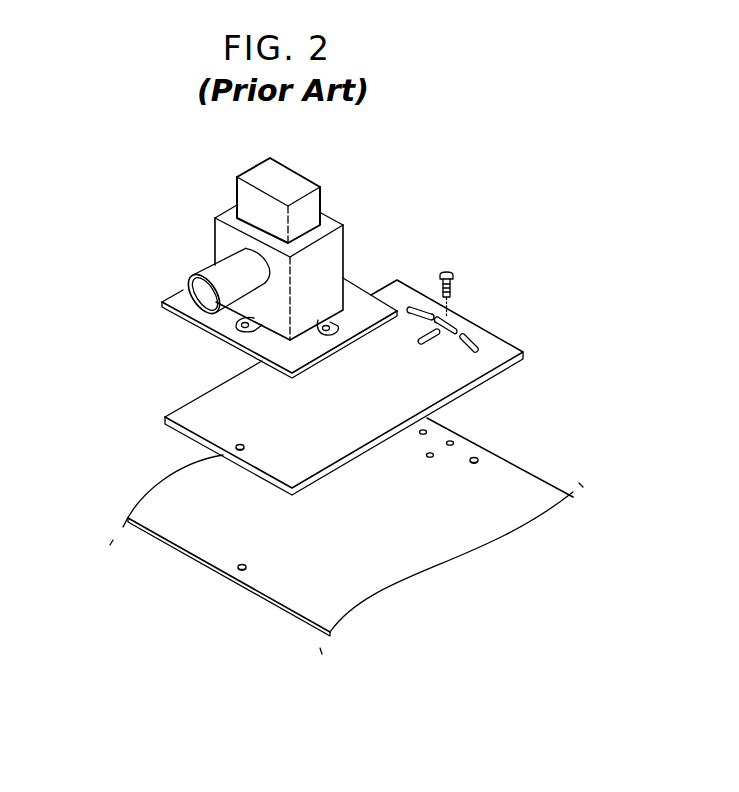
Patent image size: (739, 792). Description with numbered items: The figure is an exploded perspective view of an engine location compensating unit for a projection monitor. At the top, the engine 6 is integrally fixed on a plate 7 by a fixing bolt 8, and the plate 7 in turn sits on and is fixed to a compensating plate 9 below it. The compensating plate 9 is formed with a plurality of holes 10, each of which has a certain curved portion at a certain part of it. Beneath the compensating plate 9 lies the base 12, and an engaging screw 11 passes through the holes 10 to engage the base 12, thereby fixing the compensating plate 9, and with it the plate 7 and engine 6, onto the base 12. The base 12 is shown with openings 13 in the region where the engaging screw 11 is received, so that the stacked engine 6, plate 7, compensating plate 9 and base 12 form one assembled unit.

The engine 6 is at (296, 168).
The plate 7 is at (363, 305).
The fixing bolt 8 is at (240, 329).
The compensating plate 9 is at (500, 348).
The holes 10 is at (452, 316).
The engaging screw 11 is at (445, 270).
The base 12 is at (533, 497).
The holes 13 is at (476, 457).